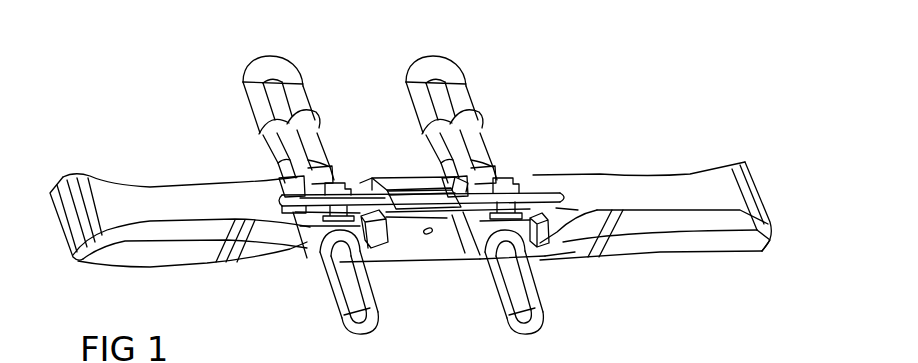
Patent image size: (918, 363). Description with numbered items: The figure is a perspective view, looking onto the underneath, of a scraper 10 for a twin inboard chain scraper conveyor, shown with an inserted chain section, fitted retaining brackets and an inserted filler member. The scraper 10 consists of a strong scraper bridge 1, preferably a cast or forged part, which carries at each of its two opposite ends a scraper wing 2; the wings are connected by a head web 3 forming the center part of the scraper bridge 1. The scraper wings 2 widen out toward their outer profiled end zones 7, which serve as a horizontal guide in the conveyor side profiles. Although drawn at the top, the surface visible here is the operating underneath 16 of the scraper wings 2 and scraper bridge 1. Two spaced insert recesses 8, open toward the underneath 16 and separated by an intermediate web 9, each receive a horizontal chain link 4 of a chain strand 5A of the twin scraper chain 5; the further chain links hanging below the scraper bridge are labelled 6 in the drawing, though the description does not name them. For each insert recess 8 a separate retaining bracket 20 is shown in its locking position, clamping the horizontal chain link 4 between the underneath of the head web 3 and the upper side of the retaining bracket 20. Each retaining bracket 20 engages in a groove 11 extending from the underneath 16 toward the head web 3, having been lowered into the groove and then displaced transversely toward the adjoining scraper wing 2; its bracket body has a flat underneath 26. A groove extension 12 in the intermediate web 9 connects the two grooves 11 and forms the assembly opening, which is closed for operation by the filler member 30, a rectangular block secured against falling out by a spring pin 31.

The scraper bridge 1 is at (176, 273).
The scraper wing 2 is at (157, 181).
The head web 3 is at (397, 250).
The horizontal chain link 4 is at (320, 250).
The scraper chain 5 is at (495, 70).
The chain strand 5A is at (309, 74).
The lower retaining clips 6 is at (335, 302).
The end zone 7 is at (74, 219).
The insert recess 8 is at (343, 168).
The intermediate web 9 is at (467, 309).
The scraper 10 is at (667, 94).
The groove 11 is at (455, 184).
The groove extension 12 is at (450, 215).
The underneath 16 is at (650, 192).
The retaining bracket 20 is at (300, 186).
The flat underneath 26 is at (363, 180).
The filler member 30 is at (394, 203).
The spring pin 31 is at (429, 238).